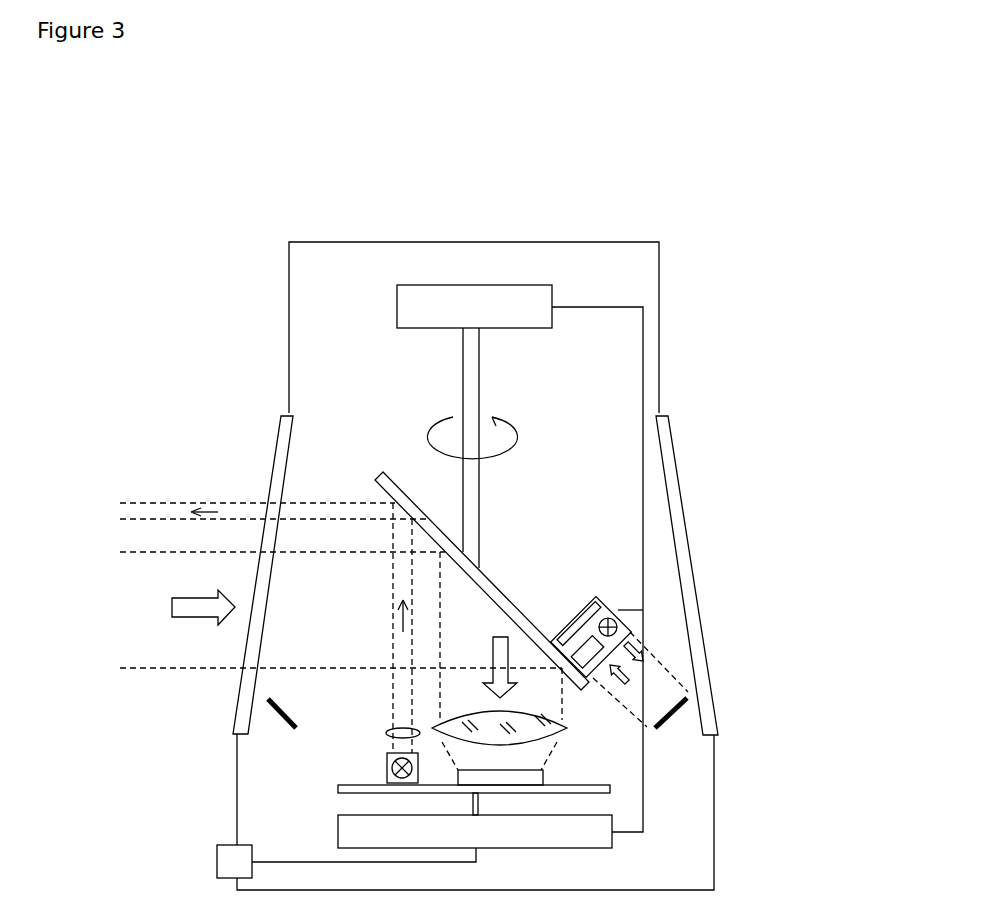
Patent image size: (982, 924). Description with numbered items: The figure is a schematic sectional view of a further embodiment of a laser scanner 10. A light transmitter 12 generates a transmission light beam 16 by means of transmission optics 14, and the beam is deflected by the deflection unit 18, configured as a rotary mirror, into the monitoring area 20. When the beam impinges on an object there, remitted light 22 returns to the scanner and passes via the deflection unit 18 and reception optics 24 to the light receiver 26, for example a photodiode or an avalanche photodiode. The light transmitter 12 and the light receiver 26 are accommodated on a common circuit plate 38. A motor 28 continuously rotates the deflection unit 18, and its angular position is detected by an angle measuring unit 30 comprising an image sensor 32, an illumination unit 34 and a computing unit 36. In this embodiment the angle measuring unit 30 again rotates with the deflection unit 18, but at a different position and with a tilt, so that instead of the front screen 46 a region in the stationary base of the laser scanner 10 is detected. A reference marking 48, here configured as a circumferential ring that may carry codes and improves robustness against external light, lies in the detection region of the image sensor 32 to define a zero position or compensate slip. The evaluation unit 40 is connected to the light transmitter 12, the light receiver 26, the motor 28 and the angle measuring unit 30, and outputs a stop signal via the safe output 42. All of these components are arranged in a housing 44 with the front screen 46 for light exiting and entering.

The laser scanner 10 is at (681, 213).
The light transmitter 12 is at (388, 758).
The transmission optics 14 is at (387, 735).
The transmission light beam 16 is at (168, 515).
The deflection unit 18 is at (387, 488).
The monitoring area 20 is at (20, 497).
The remitted light 22 is at (168, 628).
The reception optics 24 is at (480, 717).
The light receiver 26 is at (532, 783).
The motor 28 is at (435, 320).
The angle measuring unit 30 is at (596, 597).
The image sensor 32 is at (592, 676).
The illumination unit 34 is at (620, 628).
The computing unit 36 is at (573, 630).
The circuit plate 38 is at (612, 790).
The evaluation unit 40 is at (567, 838).
The safe output 42 is at (230, 862).
The housing 44 is at (714, 847).
The front screen 46 is at (245, 692).
The reference marking 48 is at (297, 718).